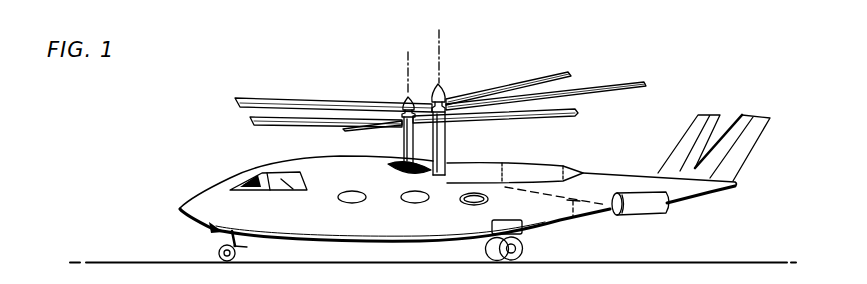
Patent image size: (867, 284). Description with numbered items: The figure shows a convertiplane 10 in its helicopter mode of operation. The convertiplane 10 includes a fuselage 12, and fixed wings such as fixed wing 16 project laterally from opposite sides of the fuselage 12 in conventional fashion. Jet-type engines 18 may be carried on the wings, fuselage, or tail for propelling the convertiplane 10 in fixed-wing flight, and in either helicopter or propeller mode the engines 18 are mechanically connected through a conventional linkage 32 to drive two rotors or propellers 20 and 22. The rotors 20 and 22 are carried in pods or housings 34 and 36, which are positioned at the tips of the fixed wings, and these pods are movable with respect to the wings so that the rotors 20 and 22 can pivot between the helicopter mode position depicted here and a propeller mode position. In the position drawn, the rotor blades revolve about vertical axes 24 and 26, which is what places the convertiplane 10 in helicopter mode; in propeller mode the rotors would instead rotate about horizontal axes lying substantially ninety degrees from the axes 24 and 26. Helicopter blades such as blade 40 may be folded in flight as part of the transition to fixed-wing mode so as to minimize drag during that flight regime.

The convertiplane 10 is at (196, 146).
The fuselage 12 is at (311, 158).
The fixed wing 16 is at (389, 163).
The jet-type engine 18 is at (643, 205).
The rotor 20 is at (451, 91).
The rotor 22 is at (402, 97).
The vertical axis 24 is at (442, 40).
The vertical axis 26 is at (407, 72).
The linkage 32 is at (573, 221).
The pod 34 is at (447, 142).
The pod 36 is at (404, 141).
The helicopter blade 40 is at (270, 100).